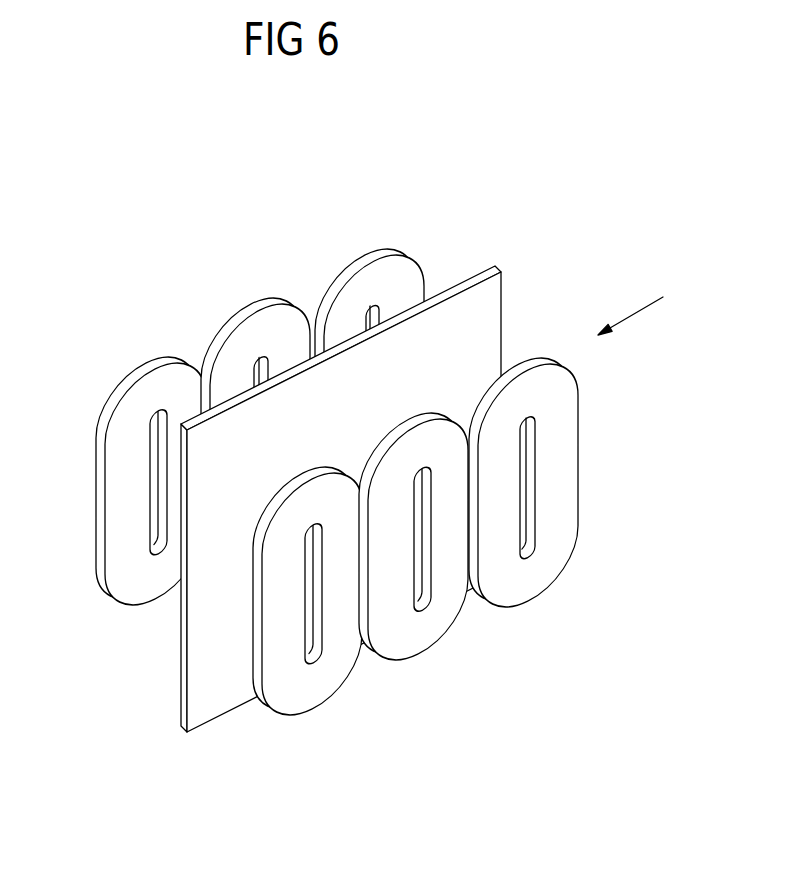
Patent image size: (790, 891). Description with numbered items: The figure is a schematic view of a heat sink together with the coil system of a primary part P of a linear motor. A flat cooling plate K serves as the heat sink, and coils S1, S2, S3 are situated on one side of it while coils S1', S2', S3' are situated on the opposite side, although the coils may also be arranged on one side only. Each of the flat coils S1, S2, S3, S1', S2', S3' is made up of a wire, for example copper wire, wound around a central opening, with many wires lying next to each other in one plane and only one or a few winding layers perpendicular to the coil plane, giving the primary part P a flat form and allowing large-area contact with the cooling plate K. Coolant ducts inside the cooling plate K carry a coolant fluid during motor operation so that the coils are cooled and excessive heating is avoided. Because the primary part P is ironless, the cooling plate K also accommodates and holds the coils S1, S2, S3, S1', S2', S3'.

The coil S1 is at (369, 353).
The coil S2 is at (255, 411).
The coil S3 is at (136, 472).
The coil S1' is at (528, 510).
The coil S2' is at (413, 561).
The coil S3' is at (307, 614).
The cooling plate K is at (473, 277).
The primary part P is at (643, 304).